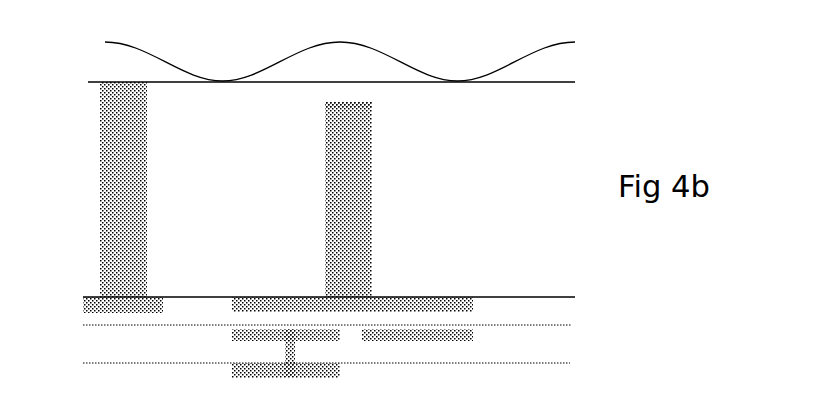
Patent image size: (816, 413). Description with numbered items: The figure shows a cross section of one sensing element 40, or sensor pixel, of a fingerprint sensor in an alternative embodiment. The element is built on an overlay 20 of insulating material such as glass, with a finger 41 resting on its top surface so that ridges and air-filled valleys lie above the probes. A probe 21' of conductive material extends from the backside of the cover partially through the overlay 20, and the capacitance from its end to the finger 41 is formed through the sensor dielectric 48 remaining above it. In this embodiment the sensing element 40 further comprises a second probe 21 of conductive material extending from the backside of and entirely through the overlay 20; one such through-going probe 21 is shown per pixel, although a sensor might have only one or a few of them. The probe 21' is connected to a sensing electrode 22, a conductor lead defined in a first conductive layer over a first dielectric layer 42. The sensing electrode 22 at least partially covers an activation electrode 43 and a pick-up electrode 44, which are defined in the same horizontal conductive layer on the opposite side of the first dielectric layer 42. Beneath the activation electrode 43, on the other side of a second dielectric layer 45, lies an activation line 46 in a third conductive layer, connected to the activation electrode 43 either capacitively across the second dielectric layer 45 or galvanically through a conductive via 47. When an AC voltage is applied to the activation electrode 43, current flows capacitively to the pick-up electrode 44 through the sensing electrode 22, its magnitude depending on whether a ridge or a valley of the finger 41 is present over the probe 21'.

The sensing element 40 is at (52, 101).
The finger 41 is at (340, 61).
The probe 21 is at (97, 189).
The probe 21' is at (324, 199).
The sensor dielectric 48 is at (360, 93).
The overlay 20 is at (321, 189).
The sensing electrode 22 is at (293, 308).
The first dielectric layer 42 is at (108, 315).
The second dielectric layer 45 is at (105, 352).
The activation electrode 43 is at (248, 339).
The pick-up electrode 44 is at (460, 333).
The activation line 46 is at (261, 366).
The conductive via 47 is at (293, 352).